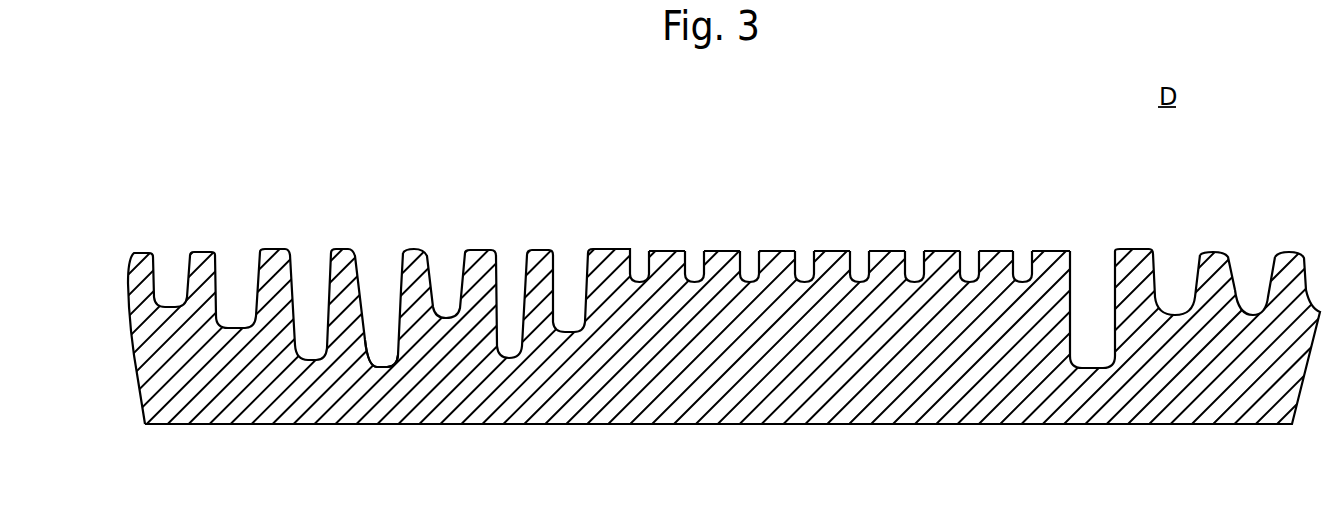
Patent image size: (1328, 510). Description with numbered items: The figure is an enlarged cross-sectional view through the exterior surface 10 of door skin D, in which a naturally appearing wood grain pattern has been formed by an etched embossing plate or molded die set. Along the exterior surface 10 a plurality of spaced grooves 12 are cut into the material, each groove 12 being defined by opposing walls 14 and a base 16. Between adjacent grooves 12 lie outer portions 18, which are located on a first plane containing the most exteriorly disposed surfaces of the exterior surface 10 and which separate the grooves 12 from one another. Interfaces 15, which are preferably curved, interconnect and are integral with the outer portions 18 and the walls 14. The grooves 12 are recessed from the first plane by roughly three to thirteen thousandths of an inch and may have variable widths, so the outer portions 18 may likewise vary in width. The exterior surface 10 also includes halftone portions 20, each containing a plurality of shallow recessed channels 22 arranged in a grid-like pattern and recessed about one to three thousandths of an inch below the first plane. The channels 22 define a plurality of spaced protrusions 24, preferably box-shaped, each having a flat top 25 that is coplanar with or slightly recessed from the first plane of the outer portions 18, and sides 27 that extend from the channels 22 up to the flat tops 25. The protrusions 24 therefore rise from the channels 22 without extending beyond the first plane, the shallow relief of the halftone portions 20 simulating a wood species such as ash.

The exterior surface 10 is at (117, 197).
The groove 12 is at (172, 253).
The wall 14 is at (1193, 296).
The interface 15 is at (427, 250).
The base 16 is at (376, 363).
The outer portion 18 is at (206, 252).
The halftone portion 20 is at (888, 211).
The recessed channel 22 is at (696, 250).
The spaced protrusion 24 is at (940, 245).
The flat top 25 is at (663, 248).
The side 27 is at (866, 262).